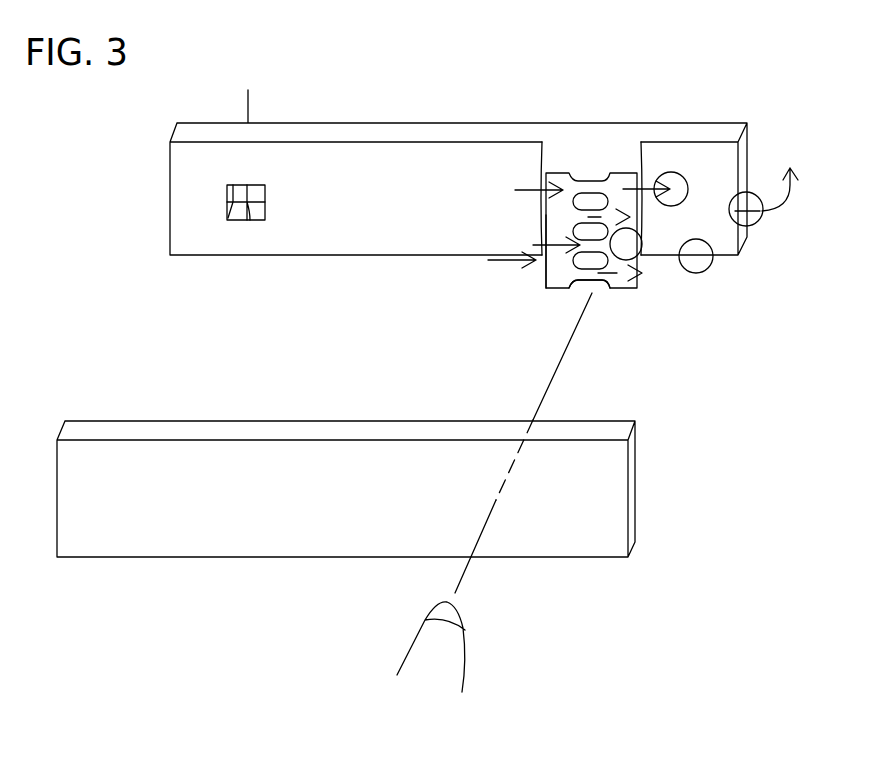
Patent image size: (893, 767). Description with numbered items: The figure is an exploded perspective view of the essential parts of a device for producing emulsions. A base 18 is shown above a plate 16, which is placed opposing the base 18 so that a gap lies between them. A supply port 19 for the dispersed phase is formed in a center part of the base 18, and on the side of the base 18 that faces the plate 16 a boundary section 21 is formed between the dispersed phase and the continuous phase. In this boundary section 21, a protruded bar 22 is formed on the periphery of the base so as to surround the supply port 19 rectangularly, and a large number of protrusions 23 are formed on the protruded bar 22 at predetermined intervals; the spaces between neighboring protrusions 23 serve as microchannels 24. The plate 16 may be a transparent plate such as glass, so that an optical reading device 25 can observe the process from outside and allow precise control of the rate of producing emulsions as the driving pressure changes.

The plate 16 is at (177, 457).
The base 18 is at (367, 142).
The supply port 19 is at (240, 197).
The boundary section 21 is at (614, 203).
The protruded bar 22 is at (566, 252).
The protrusions 23 is at (592, 202).
The microchannels 24 is at (587, 275).
The optical reading device 25 is at (455, 650).